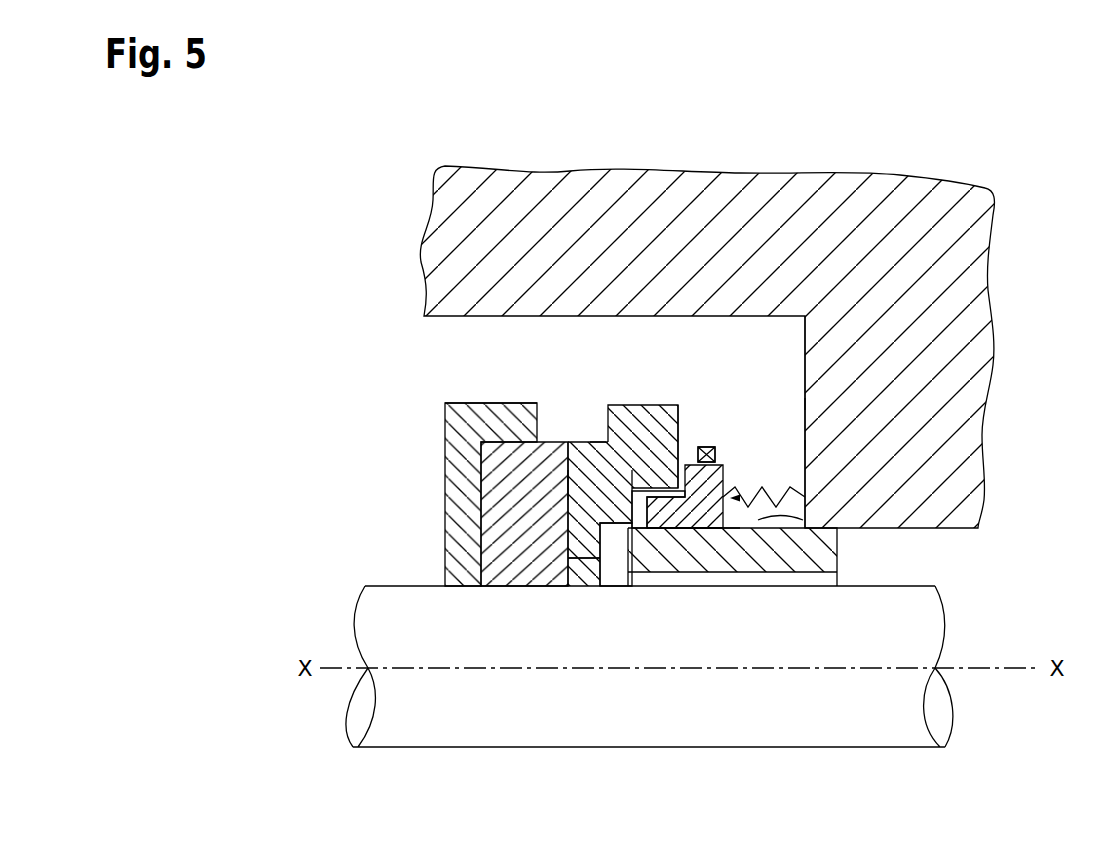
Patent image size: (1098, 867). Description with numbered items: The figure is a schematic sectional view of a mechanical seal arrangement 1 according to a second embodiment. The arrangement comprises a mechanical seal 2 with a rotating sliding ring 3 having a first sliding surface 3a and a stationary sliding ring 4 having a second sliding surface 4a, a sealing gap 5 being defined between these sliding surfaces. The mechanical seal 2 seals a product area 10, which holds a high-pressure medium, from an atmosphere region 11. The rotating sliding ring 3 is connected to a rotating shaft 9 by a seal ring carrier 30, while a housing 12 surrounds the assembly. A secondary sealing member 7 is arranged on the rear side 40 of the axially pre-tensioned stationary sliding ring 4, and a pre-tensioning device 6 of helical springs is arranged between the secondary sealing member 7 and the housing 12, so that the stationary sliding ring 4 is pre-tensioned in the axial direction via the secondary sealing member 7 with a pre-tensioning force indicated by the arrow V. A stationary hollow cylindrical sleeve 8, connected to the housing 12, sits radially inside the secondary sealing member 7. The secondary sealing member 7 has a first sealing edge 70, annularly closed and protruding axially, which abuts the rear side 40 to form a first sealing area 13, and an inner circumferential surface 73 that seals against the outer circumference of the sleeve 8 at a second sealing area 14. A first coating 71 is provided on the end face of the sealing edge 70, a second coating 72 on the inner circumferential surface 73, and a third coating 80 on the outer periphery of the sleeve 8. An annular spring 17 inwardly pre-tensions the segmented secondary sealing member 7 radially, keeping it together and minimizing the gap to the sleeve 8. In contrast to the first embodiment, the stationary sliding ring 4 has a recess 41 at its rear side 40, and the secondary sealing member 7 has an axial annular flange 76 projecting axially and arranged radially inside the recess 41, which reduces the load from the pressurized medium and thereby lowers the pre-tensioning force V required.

The mechanical seal arrangement 1 is at (375, 352).
The mechanical seal 2 is at (595, 368).
The rotating sliding ring 3 is at (503, 550).
The first sliding surface 3a is at (585, 497).
The stationary sliding ring 4 is at (597, 480).
The second sliding surface 4a is at (568, 487).
The sealing gap 5 is at (590, 442).
The pre-tensioning device 6 is at (805, 444).
The secondary sealing member 7 is at (805, 425).
The hollow cylindrical sleeve 8 is at (783, 547).
The rotating shaft 9 is at (872, 710).
The product area 10 is at (476, 375).
The atmosphere region 11 is at (904, 571).
The housing 12 is at (870, 220).
The first sealing area 13 is at (635, 476).
The second sealing area 14 is at (717, 540).
The annular spring 17 is at (805, 404).
The seal ring carrier 30 is at (462, 492).
The rear side 40 is at (680, 426).
The recess 41 is at (662, 512).
The first sealing edge 70 is at (670, 478).
The first coating 71 is at (648, 455).
The second coating 72 is at (685, 540).
The inner circumferential surface 73 is at (685, 540).
The axial annular flange 76 is at (688, 535).
The third coating 80 is at (803, 520).
The pre-tensioning force V is at (747, 470).